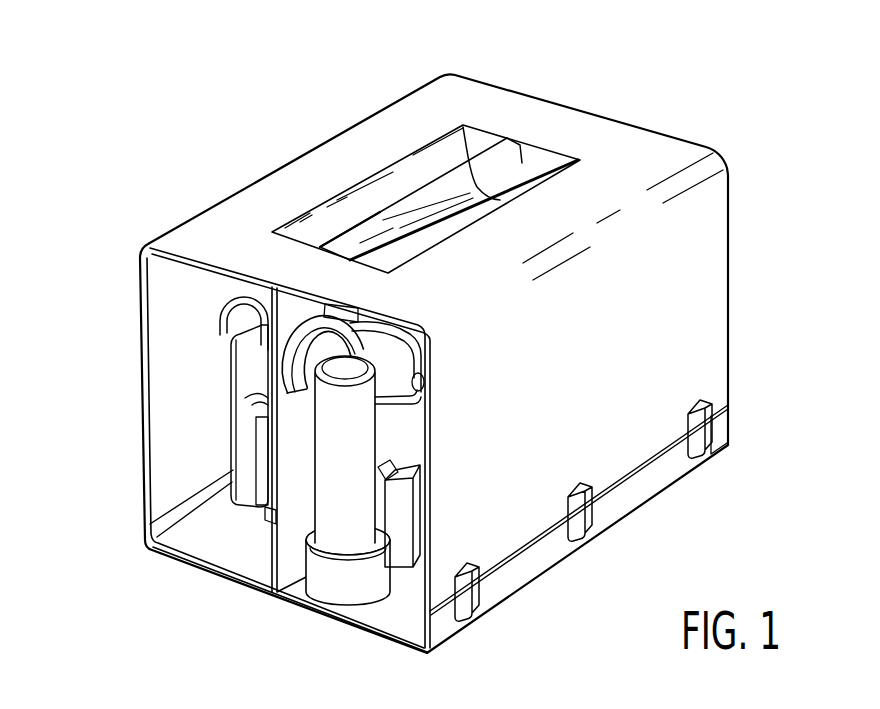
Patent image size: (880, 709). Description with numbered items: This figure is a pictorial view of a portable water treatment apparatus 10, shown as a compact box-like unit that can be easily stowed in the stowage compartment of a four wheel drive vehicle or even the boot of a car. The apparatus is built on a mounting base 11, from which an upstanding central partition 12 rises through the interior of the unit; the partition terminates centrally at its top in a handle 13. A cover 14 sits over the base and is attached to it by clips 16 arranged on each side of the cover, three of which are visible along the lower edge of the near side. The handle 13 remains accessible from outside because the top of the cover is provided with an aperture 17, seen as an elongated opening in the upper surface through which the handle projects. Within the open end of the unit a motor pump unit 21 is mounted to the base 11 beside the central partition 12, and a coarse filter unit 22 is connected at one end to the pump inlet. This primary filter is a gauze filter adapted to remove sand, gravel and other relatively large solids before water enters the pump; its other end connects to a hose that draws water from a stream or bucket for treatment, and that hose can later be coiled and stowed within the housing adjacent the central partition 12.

The water treatment apparatus 10 is at (166, 156).
The mounting base 11 is at (212, 548).
The upstanding central partition 12 is at (288, 462).
The handle 13 is at (368, 228).
The cover 14 is at (732, 194).
The clips 16 is at (583, 517).
The aperture 17 is at (533, 162).
The motor pump unit 21 is at (390, 443).
The coarse filter unit 22 is at (362, 481).